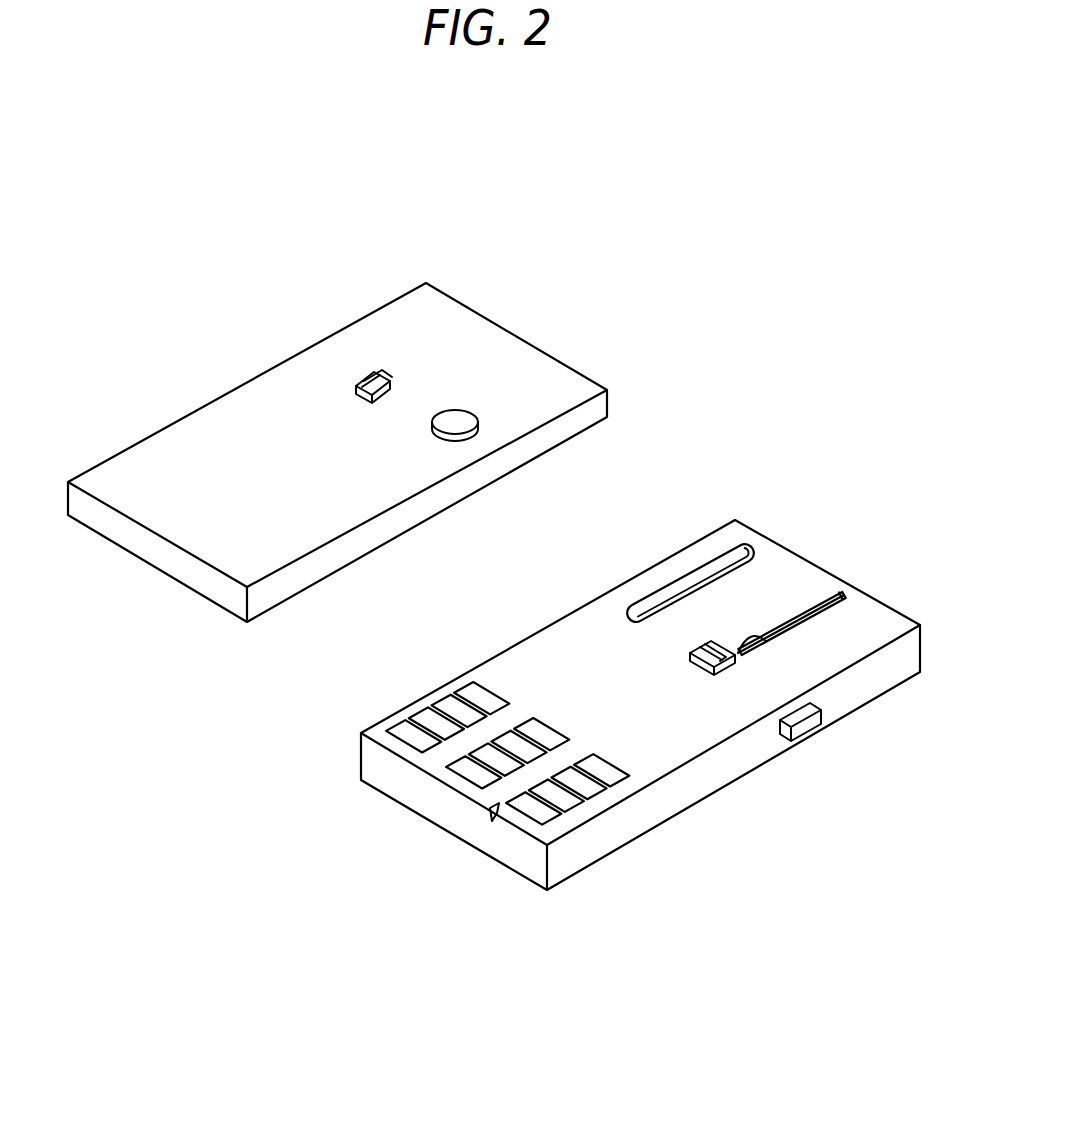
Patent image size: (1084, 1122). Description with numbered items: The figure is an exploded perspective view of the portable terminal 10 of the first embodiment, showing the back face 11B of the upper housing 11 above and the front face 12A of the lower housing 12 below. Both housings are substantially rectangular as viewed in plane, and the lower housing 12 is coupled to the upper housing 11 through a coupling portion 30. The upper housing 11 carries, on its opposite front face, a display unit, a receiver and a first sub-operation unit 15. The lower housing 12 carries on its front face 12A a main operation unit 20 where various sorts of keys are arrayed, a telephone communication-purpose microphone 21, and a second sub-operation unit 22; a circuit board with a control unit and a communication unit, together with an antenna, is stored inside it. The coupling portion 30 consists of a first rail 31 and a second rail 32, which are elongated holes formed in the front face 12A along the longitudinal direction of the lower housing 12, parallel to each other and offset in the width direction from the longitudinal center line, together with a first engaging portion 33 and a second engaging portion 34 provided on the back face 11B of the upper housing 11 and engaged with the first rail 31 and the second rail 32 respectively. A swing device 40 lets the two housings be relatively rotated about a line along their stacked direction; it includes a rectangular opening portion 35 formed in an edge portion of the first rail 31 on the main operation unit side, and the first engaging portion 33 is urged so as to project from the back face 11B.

The portable terminal 10 is at (782, 396).
The upper housing 11 is at (527, 343).
The back face of the upper housing 11B is at (552, 392).
The lower housing 12 is at (822, 567).
The front face of the lower housing 12A is at (742, 534).
The first sub-operation unit 15 is at (180, 595).
The main operation unit 20 is at (605, 812).
The telephone communication-purpose microphone 21 is at (490, 815).
The second sub-operation unit 22 is at (678, 723).
The coupling portion 30 is at (389, 618).
The first rail 31 is at (817, 600).
The second rail 32 is at (690, 580).
The first engaging portion 33 is at (367, 373).
The second engaging portion 34 is at (466, 428).
The opening portion 35 is at (768, 642).
The swing device 40 is at (257, 722).